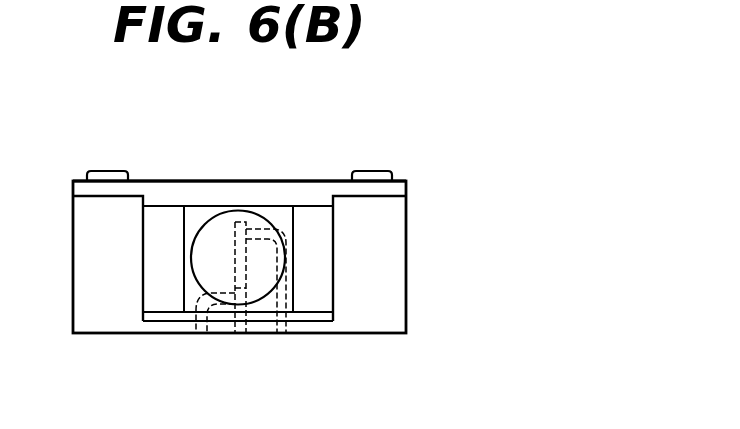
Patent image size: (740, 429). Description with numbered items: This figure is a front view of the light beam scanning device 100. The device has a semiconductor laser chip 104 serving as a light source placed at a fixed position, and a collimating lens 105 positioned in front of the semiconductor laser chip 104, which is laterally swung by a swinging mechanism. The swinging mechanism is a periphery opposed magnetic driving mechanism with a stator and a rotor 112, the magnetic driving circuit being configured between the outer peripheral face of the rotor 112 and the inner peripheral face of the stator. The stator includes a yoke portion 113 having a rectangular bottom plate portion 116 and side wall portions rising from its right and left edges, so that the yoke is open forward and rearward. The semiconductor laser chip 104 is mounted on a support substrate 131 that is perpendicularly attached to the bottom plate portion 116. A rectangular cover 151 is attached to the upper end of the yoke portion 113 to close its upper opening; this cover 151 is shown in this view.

The light beam scanning device 100 is at (447, 189).
The semiconductor laser chip 104 is at (233, 245).
The collimating lens 105 is at (208, 275).
The rotor 112 is at (313, 295).
The yoke portion 113 is at (393, 293).
The bottom plate portion 116 is at (297, 328).
The support substrate 131 is at (240, 222).
The cover 151 is at (303, 183).